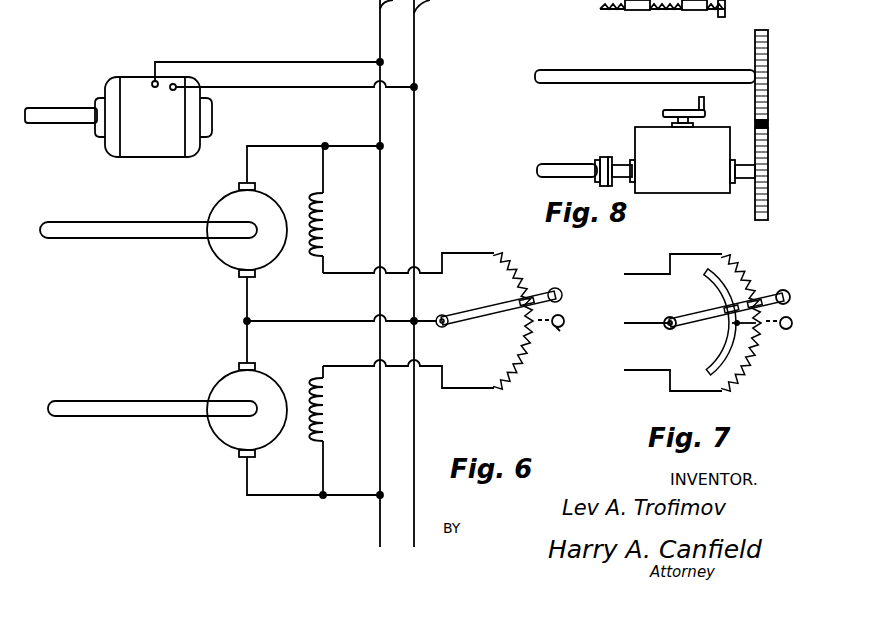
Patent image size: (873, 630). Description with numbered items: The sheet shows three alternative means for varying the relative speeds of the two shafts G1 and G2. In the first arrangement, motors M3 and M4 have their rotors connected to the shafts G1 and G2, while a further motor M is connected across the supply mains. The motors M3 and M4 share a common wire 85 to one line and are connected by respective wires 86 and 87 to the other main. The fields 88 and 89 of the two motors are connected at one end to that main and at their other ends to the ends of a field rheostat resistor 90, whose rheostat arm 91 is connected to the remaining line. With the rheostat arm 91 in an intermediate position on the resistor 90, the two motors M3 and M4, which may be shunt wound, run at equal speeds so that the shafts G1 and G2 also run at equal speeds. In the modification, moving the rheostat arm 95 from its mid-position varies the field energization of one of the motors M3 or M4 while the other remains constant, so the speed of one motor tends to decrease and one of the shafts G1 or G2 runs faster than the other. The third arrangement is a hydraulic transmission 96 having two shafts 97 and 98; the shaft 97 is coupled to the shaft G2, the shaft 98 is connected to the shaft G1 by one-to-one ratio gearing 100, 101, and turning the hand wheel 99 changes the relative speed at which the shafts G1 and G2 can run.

In FIG. 6, the common wire 85 is at (322, 321).
In FIG. 6, the wire 86 is at (316, 146).
In FIG. 6, the wire 87 is at (304, 498).
In FIG. 6, the field 88 is at (326, 230).
In FIG. 6, the field 89 is at (326, 413).
In FIG. 6, the field rheostat resistor 90 is at (518, 274).
In FIG. 7, the field rheostat resistor 90 is at (752, 364).
In FIG. 6, the rheostat arm 91 is at (483, 309).
In FIG. 7, the rheostat arm 95 is at (703, 314).
In FIG. 8, the hydraulic transmission 96 is at (688, 193).
In FIG. 8, the shaft 97 is at (624, 164).
In FIG. 8, the shaft 98 is at (748, 180).
In FIG. 8, the hand wheel 99 is at (706, 112).
In FIG. 8, the gearing 100 is at (768, 166).
In FIG. 8, the gearing 101 is at (768, 90).
In FIG. 6, the motor M is at (118, 117).
In FIG. 6, the motor M3 is at (216, 250).
In FIG. 6, the motor M4 is at (220, 435).
In FIG. 6, the shaft G1 is at (87, 229).
In FIG. 8, the shaft G1 is at (575, 73).
In FIG. 6, the shaft G2 is at (85, 406).
In FIG. 8, the shaft G2 is at (559, 160).